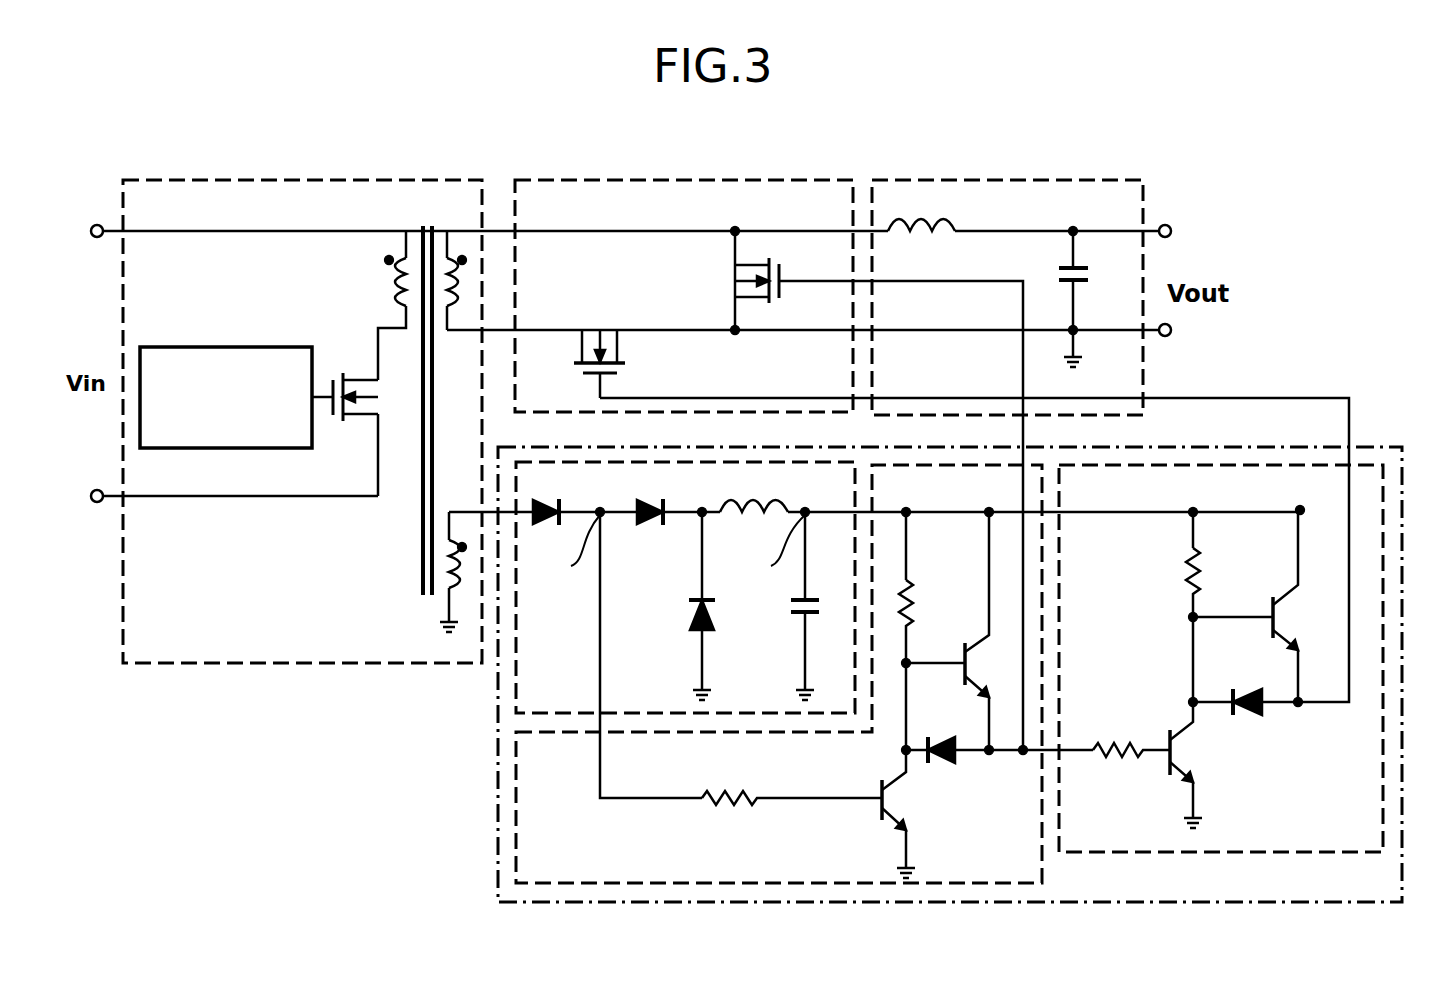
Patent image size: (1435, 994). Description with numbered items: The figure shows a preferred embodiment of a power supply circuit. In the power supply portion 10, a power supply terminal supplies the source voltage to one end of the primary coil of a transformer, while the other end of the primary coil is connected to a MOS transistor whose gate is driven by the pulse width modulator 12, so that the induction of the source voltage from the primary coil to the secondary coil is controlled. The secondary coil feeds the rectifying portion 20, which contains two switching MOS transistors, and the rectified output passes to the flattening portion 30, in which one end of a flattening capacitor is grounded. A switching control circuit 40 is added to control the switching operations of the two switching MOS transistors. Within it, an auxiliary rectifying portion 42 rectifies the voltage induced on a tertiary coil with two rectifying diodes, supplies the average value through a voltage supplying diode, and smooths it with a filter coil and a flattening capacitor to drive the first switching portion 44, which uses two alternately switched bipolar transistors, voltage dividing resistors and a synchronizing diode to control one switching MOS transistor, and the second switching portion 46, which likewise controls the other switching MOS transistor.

The power supply portion 10 is at (302, 466).
The pulse width modulator 12 is at (224, 346).
The rectifying portion 20 is at (540, 178).
The flattening portion 30 is at (1088, 178).
The switching control circuit 40 is at (498, 762).
The auxiliary rectifying portion 42 is at (516, 708).
The first switching portion 44 is at (1154, 853).
The second switching portion 46 is at (516, 880).